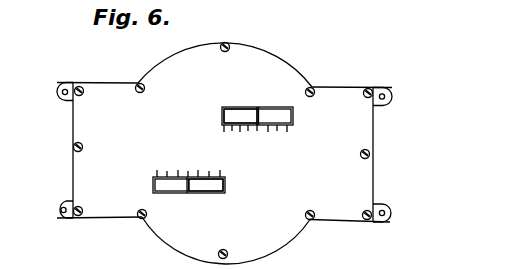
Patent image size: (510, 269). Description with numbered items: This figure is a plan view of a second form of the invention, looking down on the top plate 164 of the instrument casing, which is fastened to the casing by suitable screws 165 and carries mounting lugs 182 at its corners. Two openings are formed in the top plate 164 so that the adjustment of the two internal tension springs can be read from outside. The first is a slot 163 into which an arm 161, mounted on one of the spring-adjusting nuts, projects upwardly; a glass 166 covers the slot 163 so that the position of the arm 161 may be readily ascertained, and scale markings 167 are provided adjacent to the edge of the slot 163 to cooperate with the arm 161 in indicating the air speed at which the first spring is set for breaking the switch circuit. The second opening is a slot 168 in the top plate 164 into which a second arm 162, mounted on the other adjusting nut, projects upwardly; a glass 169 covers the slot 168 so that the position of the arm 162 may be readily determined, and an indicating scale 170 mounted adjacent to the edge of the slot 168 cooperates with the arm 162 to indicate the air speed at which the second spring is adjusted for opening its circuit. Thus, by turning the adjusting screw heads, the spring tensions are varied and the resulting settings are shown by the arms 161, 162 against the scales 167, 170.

The top plate 164 is at (352, 118).
The screws 165 is at (315, 88).
The mounting lugs 182 is at (62, 93).
The slot 168 is at (232, 106).
The glass 169 is at (240, 113).
The arm 162 is at (261, 119).
The indicating scale 170 is at (272, 129).
The glass 166 is at (161, 185).
The scale markings 167 is at (163, 171).
The arm 161 is at (188, 187).
The slot 163 is at (203, 190).